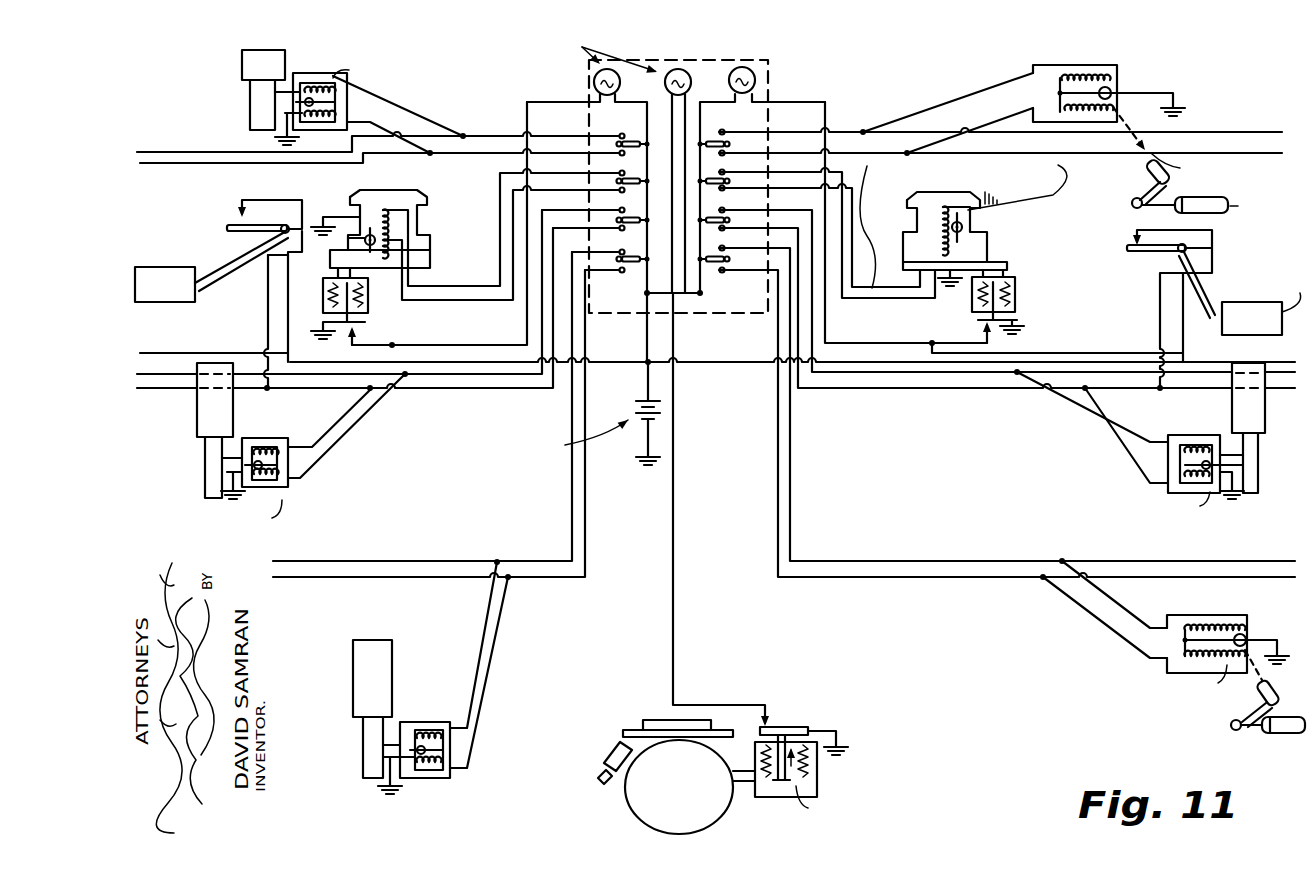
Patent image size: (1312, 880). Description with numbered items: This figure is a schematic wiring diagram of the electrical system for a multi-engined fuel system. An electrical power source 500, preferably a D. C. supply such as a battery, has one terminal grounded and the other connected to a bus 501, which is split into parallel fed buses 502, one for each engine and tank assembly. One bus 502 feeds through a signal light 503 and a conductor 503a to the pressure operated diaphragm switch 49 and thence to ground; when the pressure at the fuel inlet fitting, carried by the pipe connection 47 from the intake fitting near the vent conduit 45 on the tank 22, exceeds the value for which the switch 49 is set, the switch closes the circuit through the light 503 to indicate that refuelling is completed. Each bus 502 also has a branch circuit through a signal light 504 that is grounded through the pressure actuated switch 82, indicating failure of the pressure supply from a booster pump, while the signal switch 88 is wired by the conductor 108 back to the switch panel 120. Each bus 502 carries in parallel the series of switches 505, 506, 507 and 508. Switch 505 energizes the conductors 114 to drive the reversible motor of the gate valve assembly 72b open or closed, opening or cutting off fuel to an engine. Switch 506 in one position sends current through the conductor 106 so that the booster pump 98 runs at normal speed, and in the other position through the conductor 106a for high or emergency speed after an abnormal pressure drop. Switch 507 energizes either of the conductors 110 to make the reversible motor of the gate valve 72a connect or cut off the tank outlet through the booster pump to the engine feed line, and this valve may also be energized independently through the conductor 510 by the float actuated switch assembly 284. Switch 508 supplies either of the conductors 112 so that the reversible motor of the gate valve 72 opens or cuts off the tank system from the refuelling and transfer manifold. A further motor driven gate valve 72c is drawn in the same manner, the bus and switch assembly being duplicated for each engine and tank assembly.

The gate valve assembly 72b is at (242, 62).
The conductors 114 is at (496, 150).
The signal light 504 is at (595, 80).
The signal light 503 is at (690, 50).
The switch panel 120 is at (702, 62).
The parallel fed buses 502 is at (650, 126).
The switch 505 is at (636, 126).
The switch 506 is at (636, 163).
The switch 507 is at (633, 201).
The switch 508 is at (636, 239).
The float actuated switch assembly 284 is at (223, 230).
The booster pump 98 is at (418, 218).
The conductor 106a is at (501, 250).
The conductor 106 is at (478, 270).
The conductor 510 is at (290, 292).
The pressure actuated switch 82 is at (368, 308).
The signal switch 88 is at (1018, 305).
The conductor 108 is at (473, 341).
The bus 501 is at (647, 342).
The electrical power source 500 is at (648, 402).
The conductors 110 is at (494, 374).
The gate valve 72a is at (198, 428).
The reversible motor 72c is at (1267, 413).
The conductors 112 is at (572, 522).
The conductor 503a is at (676, 539).
The gate valve 72 is at (358, 686).
The small conduit 45 is at (617, 752).
The tank 22 is at (640, 792).
The pipe connection 47 is at (734, 792).
The pressure operated diaphragm switch 49 is at (833, 788).